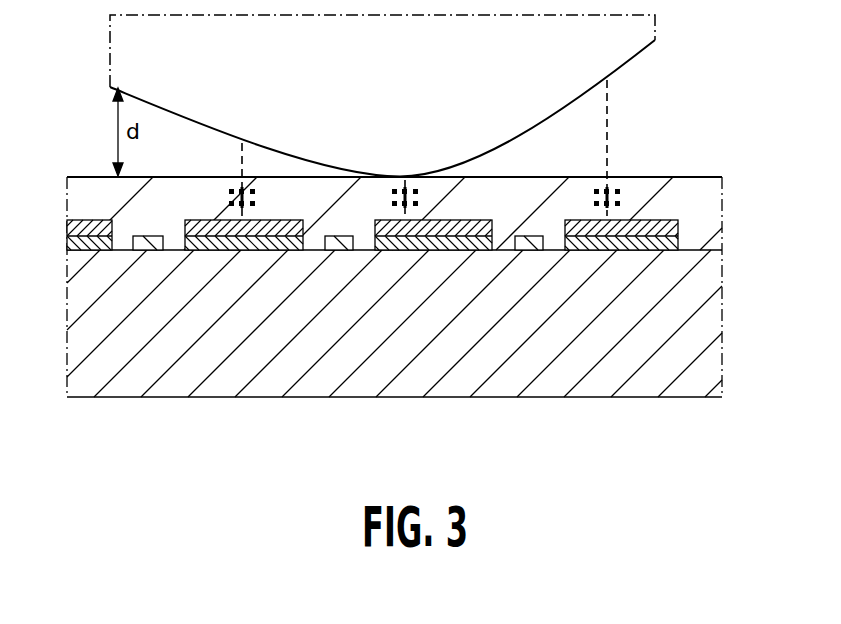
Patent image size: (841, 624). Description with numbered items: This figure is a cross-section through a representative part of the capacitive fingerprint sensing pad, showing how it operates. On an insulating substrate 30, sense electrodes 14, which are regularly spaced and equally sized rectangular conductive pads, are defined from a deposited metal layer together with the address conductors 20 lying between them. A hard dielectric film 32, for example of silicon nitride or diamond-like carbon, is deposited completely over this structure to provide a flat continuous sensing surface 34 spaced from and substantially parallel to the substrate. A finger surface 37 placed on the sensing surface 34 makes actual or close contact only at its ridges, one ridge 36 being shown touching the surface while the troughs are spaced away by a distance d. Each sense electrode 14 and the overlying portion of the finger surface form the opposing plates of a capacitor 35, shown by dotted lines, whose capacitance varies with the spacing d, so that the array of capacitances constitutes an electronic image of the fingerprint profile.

The sense electrode 14 is at (213, 250).
The address conductor 20 is at (148, 250).
The insulating substrate 30 is at (331, 378).
The hard dielectric film 32 is at (86, 190).
The sensing surface 34 is at (673, 182).
The capacitor 35 is at (248, 190).
The ridge 36 is at (562, 107).
The finger surface 37 is at (636, 57).